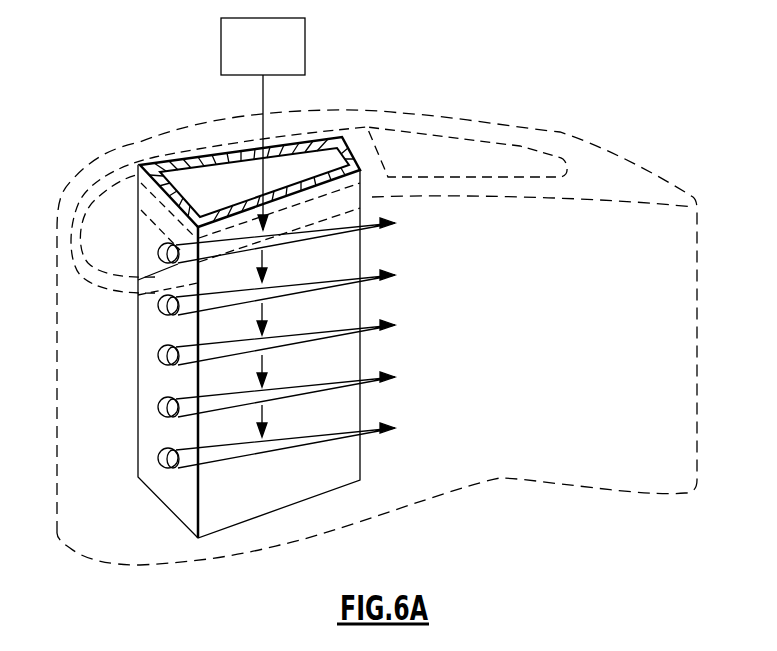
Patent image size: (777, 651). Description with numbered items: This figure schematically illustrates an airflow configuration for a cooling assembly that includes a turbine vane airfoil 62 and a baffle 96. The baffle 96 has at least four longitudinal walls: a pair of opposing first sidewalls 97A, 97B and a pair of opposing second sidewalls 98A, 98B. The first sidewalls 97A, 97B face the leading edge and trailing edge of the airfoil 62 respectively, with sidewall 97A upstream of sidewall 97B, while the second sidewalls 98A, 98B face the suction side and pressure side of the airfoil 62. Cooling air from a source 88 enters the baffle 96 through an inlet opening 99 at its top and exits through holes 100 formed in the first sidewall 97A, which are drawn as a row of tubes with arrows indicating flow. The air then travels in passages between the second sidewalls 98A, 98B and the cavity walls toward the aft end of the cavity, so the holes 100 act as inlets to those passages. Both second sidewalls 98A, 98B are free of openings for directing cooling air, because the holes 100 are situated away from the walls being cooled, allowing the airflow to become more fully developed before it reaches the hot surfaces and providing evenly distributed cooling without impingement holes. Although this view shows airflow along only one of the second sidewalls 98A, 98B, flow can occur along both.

The airfoil 62 is at (528, 450).
The source 88 is at (279, 59).
The baffle 96 is at (138, 247).
The first sidewall 97A is at (172, 188).
The first sidewall 97B is at (351, 143).
The second sidewall 98A is at (280, 150).
The second sidewall 98B is at (255, 198).
The inlet opening 99 is at (279, 153).
The holes 100 is at (167, 400).